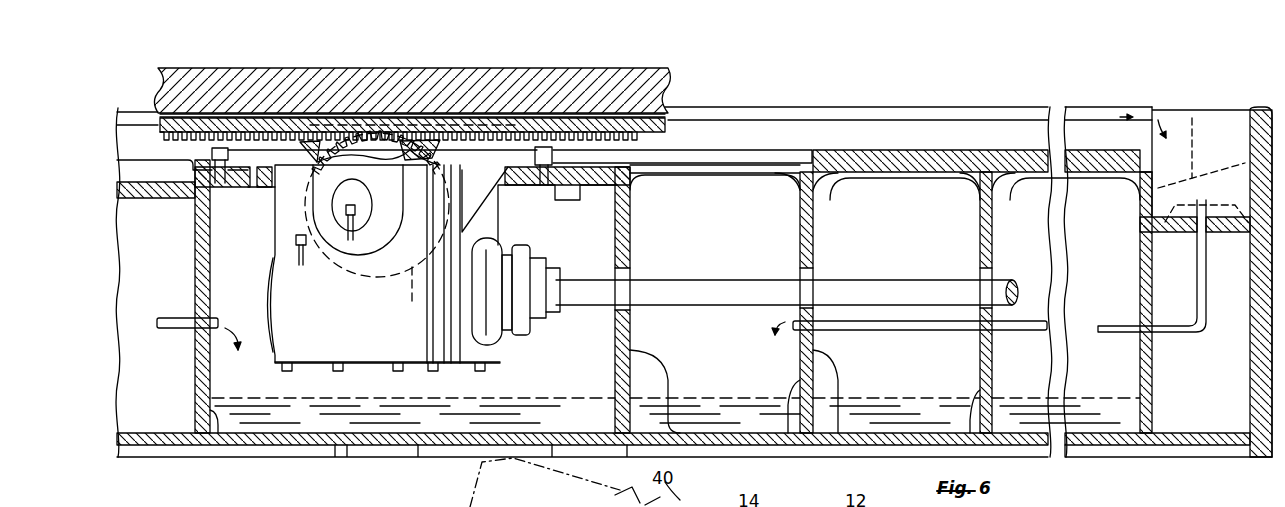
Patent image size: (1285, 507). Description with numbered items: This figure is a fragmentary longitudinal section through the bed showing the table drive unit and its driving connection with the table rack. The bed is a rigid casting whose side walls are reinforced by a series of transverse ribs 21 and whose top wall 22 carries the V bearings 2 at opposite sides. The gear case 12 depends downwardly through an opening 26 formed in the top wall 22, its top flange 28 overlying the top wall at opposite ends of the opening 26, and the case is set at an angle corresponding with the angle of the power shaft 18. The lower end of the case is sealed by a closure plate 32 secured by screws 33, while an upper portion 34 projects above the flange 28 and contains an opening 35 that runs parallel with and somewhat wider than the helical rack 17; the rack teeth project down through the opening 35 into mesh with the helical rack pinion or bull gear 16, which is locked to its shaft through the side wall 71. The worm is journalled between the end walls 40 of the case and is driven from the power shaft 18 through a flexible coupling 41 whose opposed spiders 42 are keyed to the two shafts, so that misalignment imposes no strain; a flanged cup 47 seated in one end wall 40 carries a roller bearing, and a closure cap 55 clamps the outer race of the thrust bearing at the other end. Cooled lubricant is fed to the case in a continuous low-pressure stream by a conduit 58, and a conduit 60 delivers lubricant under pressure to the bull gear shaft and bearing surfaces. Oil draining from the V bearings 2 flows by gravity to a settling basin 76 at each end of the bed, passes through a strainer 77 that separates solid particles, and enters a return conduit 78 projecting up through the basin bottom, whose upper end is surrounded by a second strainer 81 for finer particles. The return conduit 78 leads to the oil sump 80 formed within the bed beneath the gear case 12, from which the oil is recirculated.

The V bearing 2 is at (845, 107).
The gear case 12 is at (290, 218).
The helical rack pinion 16 is at (416, 297).
The helical rack 17 is at (680, 113).
The power shaft 18 is at (895, 288).
The transverse rib 21 is at (200, 228).
The top wall 22 is at (565, 76).
The opening 26 is at (262, 188).
The top flange 28 is at (532, 188).
The closure plate 32 is at (395, 372).
The screw 33 is at (284, 372).
The upper portion 34 is at (455, 148).
The opening 35 is at (322, 160).
The end wall 40 is at (485, 224).
The flexible coupling 41 is at (553, 318).
The spider 42 is at (530, 262).
The flanged cup 47 is at (493, 338).
The closure cap 55 is at (264, 278).
The conduit 58 is at (304, 262).
The conduit 60 is at (352, 240).
The side wall 71 is at (300, 336).
The settling basin 76 is at (1238, 128).
The strainer 77 is at (1156, 146).
The return conduit 78 is at (180, 328).
The oil sump 80 is at (392, 410).
The second strainer 81 is at (1202, 190).